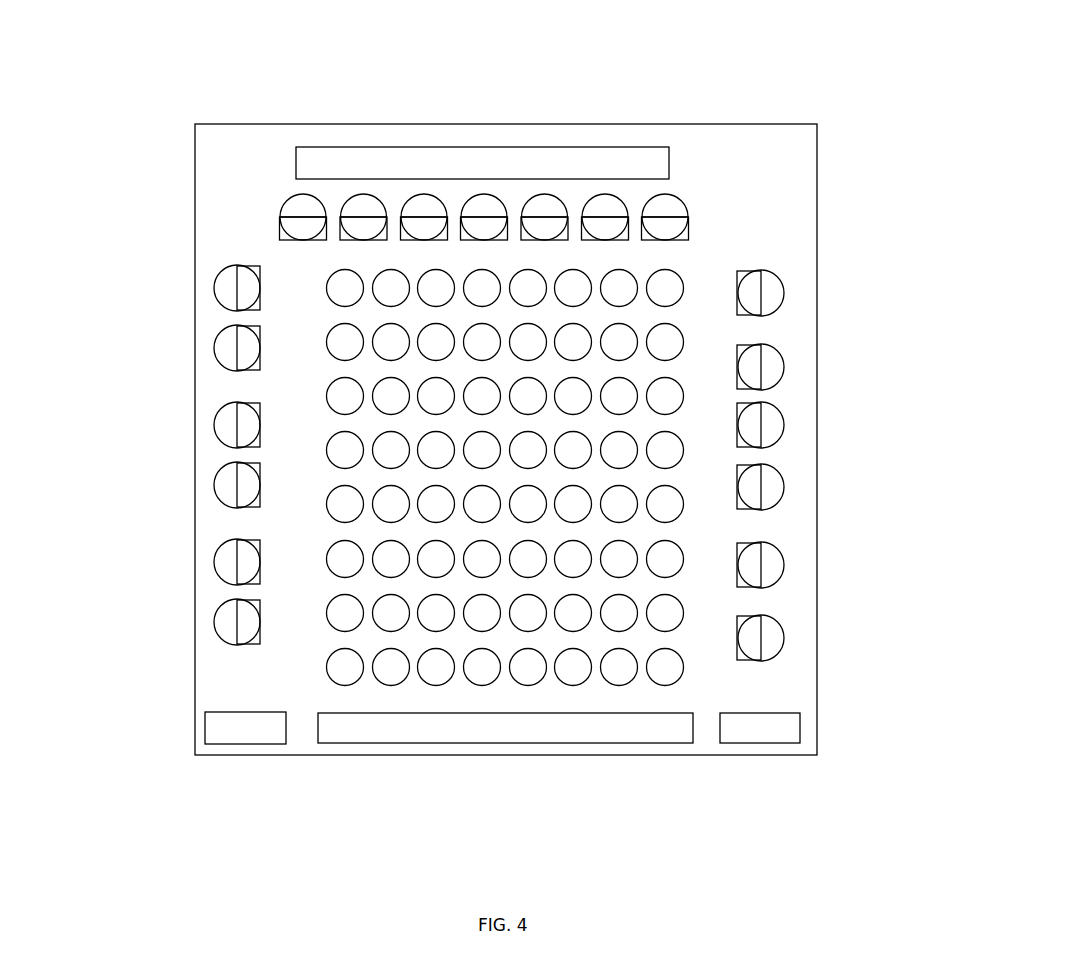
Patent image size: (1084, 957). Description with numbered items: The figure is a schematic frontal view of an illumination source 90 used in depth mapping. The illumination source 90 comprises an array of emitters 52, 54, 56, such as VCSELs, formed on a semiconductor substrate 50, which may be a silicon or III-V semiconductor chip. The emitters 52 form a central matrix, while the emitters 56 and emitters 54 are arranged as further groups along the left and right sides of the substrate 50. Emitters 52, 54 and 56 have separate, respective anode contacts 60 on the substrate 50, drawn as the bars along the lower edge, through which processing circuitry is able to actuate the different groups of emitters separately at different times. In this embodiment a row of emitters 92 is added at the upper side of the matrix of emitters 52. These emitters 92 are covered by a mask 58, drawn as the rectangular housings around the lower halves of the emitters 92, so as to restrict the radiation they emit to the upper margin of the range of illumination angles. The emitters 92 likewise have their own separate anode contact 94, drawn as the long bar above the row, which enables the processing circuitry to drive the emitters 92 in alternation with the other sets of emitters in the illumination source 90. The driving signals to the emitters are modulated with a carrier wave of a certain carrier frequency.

The illumination source 90 is at (125, 68).
The substrate 50 is at (805, 560).
The anode contact 94 is at (532, 160).
The mask 58 is at (688, 233).
The emitters 92 is at (550, 211).
The emitters 52 is at (665, 286).
The emitters 56 is at (223, 293).
The emitters 54 is at (770, 368).
The anode contacts 60 is at (546, 728).